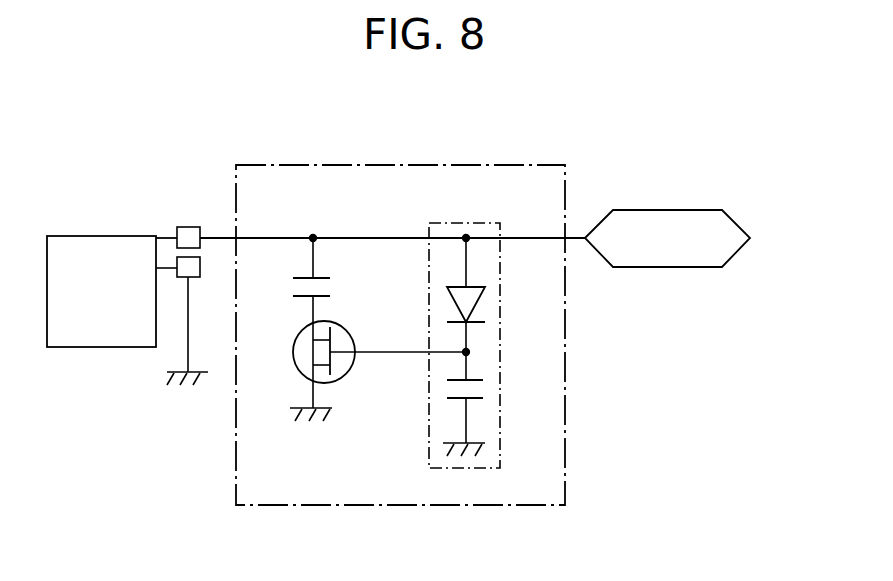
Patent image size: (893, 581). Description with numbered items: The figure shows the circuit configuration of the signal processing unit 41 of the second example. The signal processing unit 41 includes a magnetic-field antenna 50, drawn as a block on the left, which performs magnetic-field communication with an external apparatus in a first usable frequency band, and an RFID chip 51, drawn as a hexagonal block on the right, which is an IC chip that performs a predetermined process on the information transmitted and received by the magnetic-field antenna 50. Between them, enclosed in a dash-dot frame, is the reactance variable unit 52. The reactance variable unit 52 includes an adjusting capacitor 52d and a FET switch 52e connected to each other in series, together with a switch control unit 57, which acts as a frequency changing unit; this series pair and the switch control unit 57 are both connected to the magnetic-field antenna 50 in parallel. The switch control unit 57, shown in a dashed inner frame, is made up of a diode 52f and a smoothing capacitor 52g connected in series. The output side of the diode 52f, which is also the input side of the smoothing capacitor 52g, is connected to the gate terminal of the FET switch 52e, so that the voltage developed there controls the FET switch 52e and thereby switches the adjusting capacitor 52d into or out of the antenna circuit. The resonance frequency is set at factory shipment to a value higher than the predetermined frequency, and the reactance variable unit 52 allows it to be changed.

The signal processing unit 41 is at (620, 126).
The magnetic-field antenna 50 is at (88, 236).
The RFID chip 51 is at (724, 211).
The reactance variable unit 52 is at (505, 165).
The adjusting capacitor 52d is at (333, 287).
The FET switch 52e is at (345, 323).
The diode 52f is at (492, 287).
The smoothing capacitor 52g is at (488, 380).
The switch control unit 57 is at (472, 222).